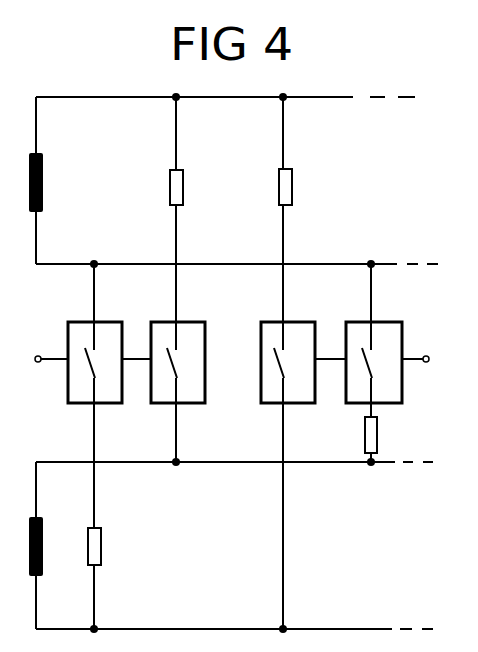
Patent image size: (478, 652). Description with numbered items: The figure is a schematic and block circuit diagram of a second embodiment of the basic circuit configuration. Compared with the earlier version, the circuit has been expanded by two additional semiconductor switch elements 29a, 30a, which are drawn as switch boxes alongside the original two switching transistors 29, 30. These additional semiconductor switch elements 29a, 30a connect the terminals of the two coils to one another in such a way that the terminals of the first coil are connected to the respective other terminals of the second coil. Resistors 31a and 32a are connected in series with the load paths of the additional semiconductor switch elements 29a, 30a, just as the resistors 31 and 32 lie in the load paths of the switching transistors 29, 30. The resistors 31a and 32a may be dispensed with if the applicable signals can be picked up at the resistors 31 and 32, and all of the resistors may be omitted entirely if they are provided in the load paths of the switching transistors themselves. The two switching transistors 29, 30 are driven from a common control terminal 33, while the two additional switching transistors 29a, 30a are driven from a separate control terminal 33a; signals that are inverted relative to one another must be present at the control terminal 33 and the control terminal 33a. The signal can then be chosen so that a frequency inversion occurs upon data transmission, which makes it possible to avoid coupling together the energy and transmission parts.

The semiconductor switch element 29 is at (83, 327).
The semiconductor switch element 30 is at (168, 327).
The additional semiconductor switch element 29a is at (278, 327).
The additional semiconductor switch element 30a is at (359, 327).
The resistor 31 is at (192, 189).
The resistor 31a is at (308, 189).
The resistor 32 is at (111, 549).
The resistor 32a is at (394, 437).
The control terminal 33 is at (50, 381).
The control terminal 33a is at (428, 383).